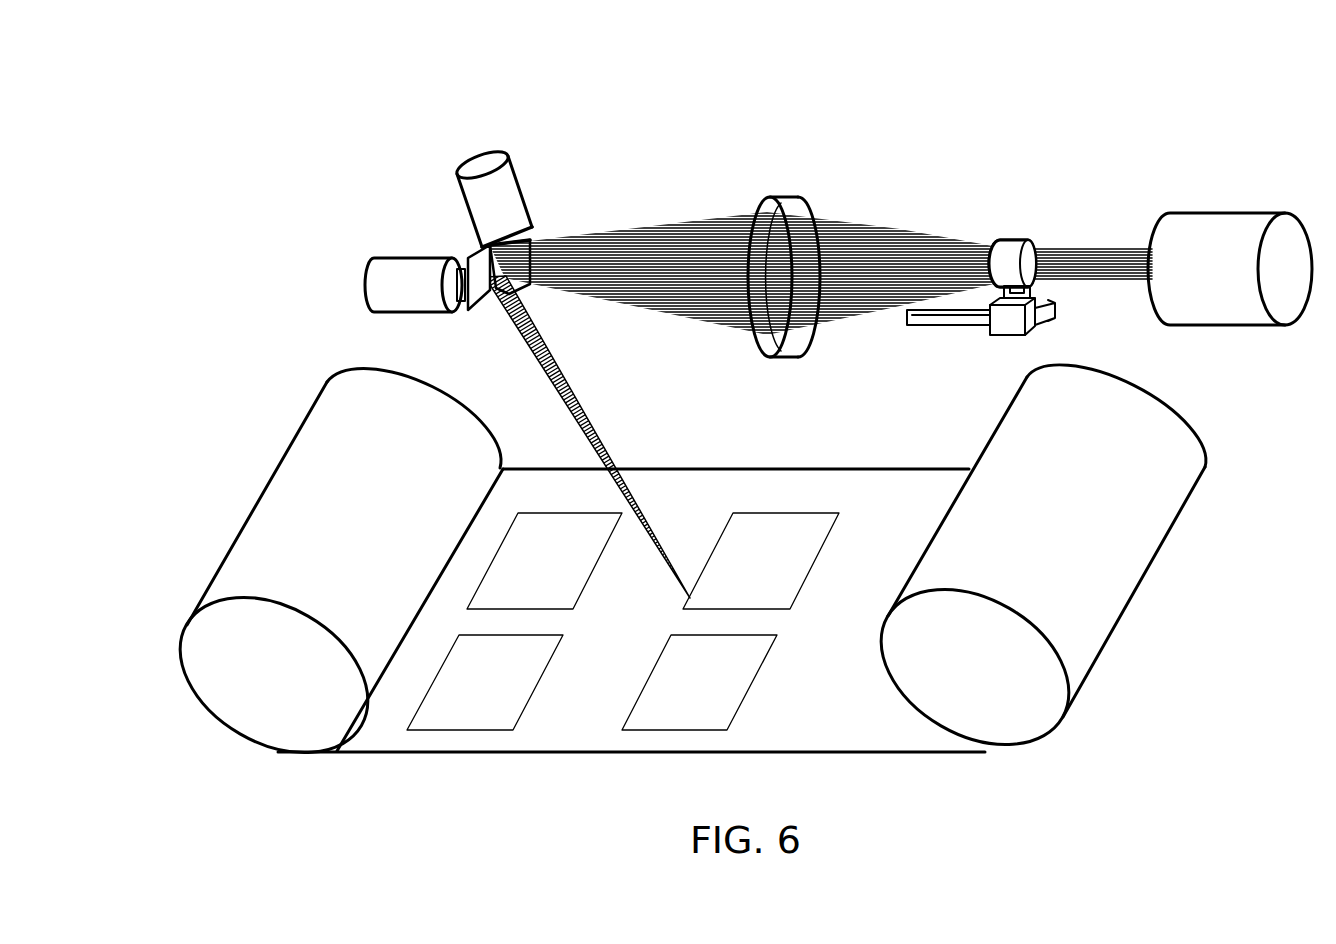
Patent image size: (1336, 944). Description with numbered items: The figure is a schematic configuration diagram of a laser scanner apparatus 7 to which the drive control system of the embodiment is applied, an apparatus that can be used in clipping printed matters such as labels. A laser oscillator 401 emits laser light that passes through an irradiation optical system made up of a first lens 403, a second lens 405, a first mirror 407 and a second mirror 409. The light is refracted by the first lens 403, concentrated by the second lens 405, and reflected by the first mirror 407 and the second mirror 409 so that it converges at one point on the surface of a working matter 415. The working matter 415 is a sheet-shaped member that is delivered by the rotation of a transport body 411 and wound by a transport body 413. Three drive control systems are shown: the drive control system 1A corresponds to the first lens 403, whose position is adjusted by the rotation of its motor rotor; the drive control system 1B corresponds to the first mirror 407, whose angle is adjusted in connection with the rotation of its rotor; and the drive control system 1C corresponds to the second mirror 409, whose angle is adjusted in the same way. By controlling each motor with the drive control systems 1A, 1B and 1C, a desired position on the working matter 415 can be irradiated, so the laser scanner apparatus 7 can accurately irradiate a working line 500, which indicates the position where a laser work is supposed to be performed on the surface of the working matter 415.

The laser scanner apparatus 7 is at (1208, 126).
The drive control system 1A is at (990, 329).
The drive control system 1B is at (521, 162).
The drive control system 1C is at (383, 257).
The laser oscillator 401 is at (1242, 213).
The first lens 403 is at (1014, 240).
The second lens 405 is at (778, 197).
The first mirror 407 is at (532, 247).
The second mirror 409 is at (482, 297).
The transport body 411 is at (311, 430).
The transport body 413 is at (1119, 380).
The working matter 415 is at (857, 483).
The working line 500 is at (806, 580).